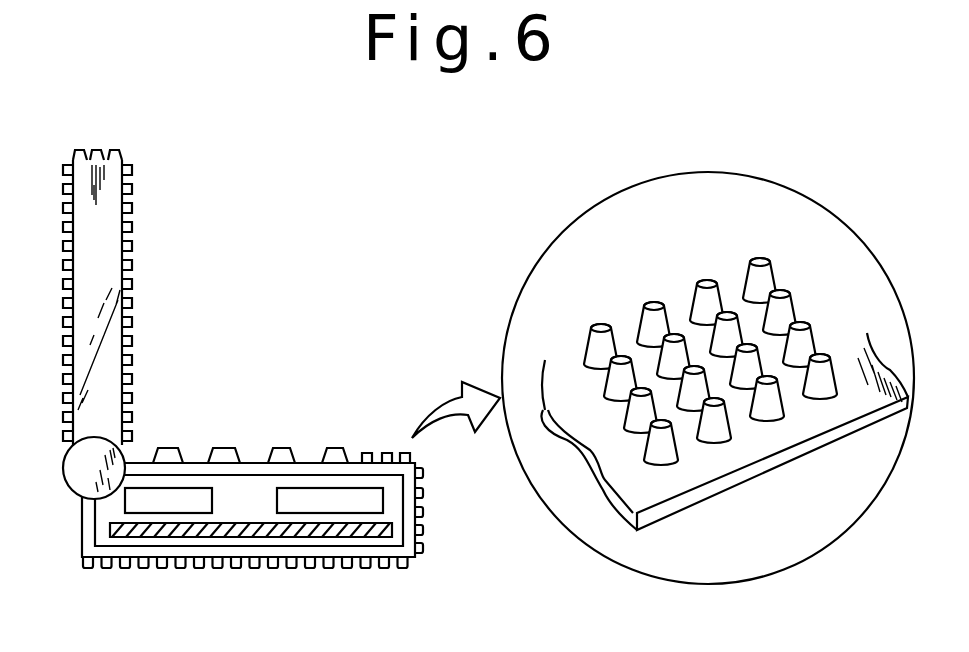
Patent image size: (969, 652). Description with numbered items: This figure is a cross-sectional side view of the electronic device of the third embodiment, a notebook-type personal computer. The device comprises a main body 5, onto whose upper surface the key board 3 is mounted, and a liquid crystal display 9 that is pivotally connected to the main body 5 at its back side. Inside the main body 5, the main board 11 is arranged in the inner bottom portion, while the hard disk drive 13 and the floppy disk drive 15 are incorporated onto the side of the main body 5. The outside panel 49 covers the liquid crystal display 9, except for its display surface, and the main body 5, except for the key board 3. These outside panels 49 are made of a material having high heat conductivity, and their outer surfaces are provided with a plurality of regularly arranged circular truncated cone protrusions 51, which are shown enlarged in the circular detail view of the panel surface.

The key board 3 is at (280, 451).
The main body 5 is at (495, 353).
The liquid crystal display 9 is at (152, 197).
The main board 11 is at (240, 523).
The hard disk drive 13 is at (145, 498).
The floppy disk drive 15 is at (328, 503).
The outside panel 49 is at (412, 556).
The circular truncated cone protrusions 51 is at (424, 530).